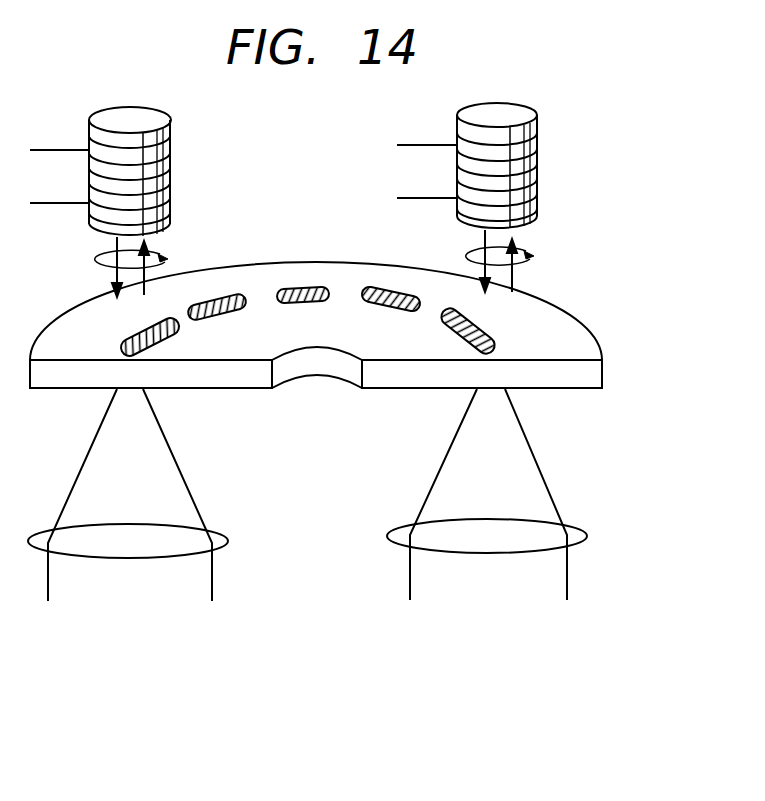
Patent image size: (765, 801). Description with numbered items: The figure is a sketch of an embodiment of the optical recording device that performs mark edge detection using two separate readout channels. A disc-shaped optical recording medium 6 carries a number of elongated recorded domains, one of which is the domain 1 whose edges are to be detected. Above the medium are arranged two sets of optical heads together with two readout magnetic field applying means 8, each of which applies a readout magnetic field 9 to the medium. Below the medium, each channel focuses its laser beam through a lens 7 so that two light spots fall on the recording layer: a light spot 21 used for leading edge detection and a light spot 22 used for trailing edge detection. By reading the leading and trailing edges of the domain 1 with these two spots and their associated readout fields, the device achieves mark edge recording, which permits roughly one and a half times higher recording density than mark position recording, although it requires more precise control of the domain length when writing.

The domain 1 is at (483, 326).
The optical recording medium 6 is at (576, 336).
The lens 7 is at (578, 532).
The readout magnetic field applying means 8 is at (172, 178).
The readout magnetic field 9 is at (98, 257).
The light spot for leading edge detection 21 is at (178, 460).
The light spot for trailing edge detection 22 is at (440, 462).